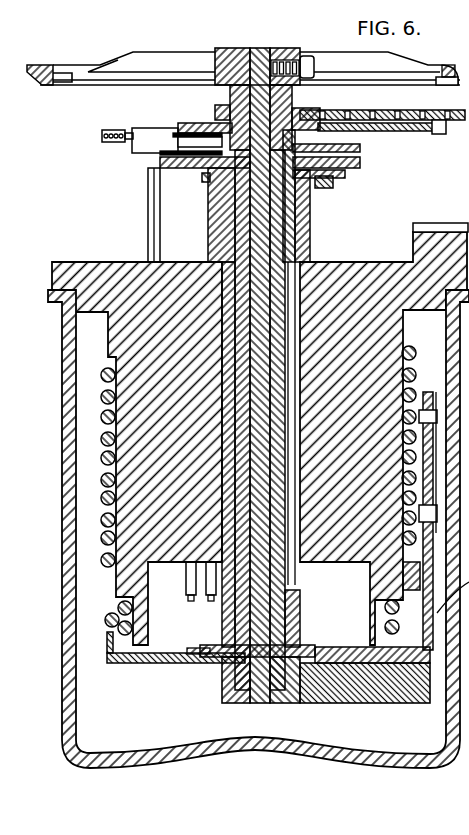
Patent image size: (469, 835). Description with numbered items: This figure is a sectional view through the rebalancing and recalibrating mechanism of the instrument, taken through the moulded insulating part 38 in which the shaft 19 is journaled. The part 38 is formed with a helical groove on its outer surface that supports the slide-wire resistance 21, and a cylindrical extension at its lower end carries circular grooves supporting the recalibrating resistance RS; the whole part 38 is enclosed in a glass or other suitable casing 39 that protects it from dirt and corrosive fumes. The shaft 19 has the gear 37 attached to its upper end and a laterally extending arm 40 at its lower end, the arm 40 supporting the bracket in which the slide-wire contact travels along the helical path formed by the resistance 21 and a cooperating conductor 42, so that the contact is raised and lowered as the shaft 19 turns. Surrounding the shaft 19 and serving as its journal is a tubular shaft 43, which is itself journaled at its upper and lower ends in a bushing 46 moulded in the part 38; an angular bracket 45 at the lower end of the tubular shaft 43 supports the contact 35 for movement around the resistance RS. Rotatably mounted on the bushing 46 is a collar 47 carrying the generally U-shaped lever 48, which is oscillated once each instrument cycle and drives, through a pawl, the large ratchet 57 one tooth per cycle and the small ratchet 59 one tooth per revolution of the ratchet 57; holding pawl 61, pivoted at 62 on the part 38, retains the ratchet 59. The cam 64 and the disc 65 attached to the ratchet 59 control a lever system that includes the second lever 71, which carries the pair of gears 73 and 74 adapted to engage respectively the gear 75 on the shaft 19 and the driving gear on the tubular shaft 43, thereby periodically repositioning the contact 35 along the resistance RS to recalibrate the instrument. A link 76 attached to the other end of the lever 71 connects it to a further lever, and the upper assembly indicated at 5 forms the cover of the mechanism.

The top plate assembly 5 is at (13, 130).
The shaft 19 is at (260, 54).
The gear 37 is at (443, 72).
The gear 75 is at (286, 110).
The gear 73 is at (412, 110).
The gear 74 is at (426, 126).
The small ratchet 59 is at (362, 148).
The disc 65 is at (362, 159).
The cam 64 is at (346, 173).
The large ratchet 57 is at (338, 183).
The tubular shaft 43 is at (308, 235).
The bushing 46 is at (310, 254).
The part 38 is at (78, 268).
The holding pawl 61 is at (186, 125).
The link 76 is at (112, 130).
The second lever 71 is at (130, 132).
The pivot 62 is at (150, 190).
The lever 48 is at (205, 178).
The collar 47 is at (213, 210).
The cooperating conductor 42 is at (413, 351).
The slide-wire resistance 21 is at (415, 384).
The contact 35 is at (108, 612).
The recalibrating resistance RS is at (400, 633).
The angular bracket 45 is at (157, 664).
The laterally extending arm 40 is at (320, 704).
The casing 39 is at (62, 707).